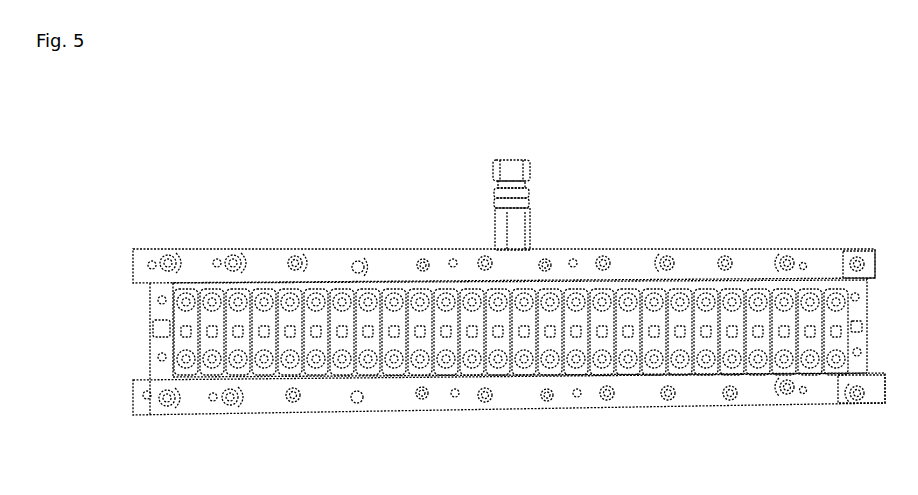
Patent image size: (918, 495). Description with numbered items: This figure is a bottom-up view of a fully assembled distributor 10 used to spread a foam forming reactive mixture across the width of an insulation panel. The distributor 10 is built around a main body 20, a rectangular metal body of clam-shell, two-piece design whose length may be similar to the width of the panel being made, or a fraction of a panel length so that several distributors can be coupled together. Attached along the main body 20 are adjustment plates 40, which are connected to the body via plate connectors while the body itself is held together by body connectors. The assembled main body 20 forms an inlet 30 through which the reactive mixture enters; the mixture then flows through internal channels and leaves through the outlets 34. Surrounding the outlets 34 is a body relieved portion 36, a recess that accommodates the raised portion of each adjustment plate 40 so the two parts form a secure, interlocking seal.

The distributor 10 is at (478, 286).
The main body 20 is at (340, 249).
The inlet 30 is at (528, 172).
The outlets 34 is at (160, 330).
The body relieved portion 36 is at (165, 320).
The adjustment plates 40 is at (427, 342).